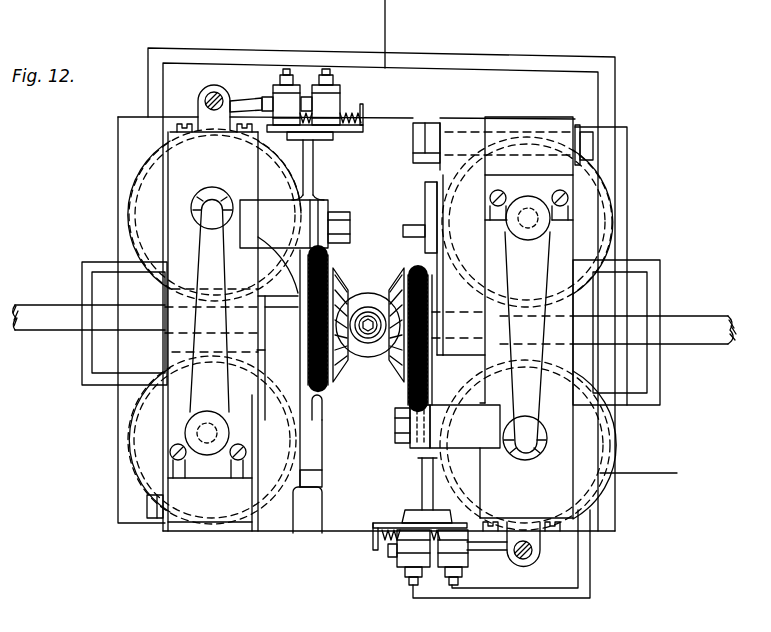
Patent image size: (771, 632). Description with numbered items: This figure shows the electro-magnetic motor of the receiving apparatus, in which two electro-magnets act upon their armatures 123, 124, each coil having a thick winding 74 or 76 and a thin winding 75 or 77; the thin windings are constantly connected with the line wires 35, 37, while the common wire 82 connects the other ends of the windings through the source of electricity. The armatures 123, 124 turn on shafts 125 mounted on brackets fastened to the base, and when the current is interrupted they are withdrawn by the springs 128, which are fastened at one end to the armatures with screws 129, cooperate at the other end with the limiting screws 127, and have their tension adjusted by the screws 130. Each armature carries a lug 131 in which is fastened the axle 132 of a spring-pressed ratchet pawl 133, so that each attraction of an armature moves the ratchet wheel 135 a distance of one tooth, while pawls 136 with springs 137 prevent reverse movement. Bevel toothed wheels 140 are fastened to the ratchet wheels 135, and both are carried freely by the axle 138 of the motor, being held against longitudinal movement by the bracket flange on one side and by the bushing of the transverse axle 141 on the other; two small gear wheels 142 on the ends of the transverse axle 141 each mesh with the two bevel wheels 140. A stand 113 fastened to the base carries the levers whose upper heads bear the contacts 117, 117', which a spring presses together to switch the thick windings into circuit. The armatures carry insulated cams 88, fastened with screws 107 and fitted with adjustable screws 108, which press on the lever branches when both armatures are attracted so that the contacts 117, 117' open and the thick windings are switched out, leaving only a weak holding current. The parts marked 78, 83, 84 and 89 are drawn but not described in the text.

The wire 35 is at (146, 477).
The wire 37 is at (671, 495).
The thick winding 74 is at (389, 297).
The thin winding 75 is at (489, 52).
The thick winding 76 is at (176, 216).
The thin winding 77 is at (291, 46).
The frame plate 78 is at (593, 507).
The common wire 82 is at (388, 75).
The support rod 83 is at (401, 34).
The connecting plate 84 is at (487, 563).
The cam 88 is at (538, 544).
The terminal box 89 is at (490, 607).
The screw 107 is at (503, 520).
The screw 108 is at (527, 552).
The stand 113 is at (422, 486).
The contact 117 is at (488, 570).
The contact 117' is at (475, 554).
The armature 123 is at (172, 186).
The armature 124 is at (567, 428).
The shaft 125 is at (412, 142).
The screw 127 is at (203, 195).
The spring 128 is at (370, 327).
The screw 129 is at (172, 451).
The screw 130 is at (188, 427).
The lug 131 is at (490, 472).
The axle 132 is at (320, 208).
The ratchet pawl 133 is at (417, 450).
The ratchet wheel 135 is at (415, 278).
The pawl 136 is at (412, 226).
The spring 137 is at (417, 190).
The axle 138 is at (712, 322).
The bevel toothed wheel 140 is at (332, 372).
The transverse axle 141 is at (368, 318).
The small gear wheel 142 is at (369, 360).